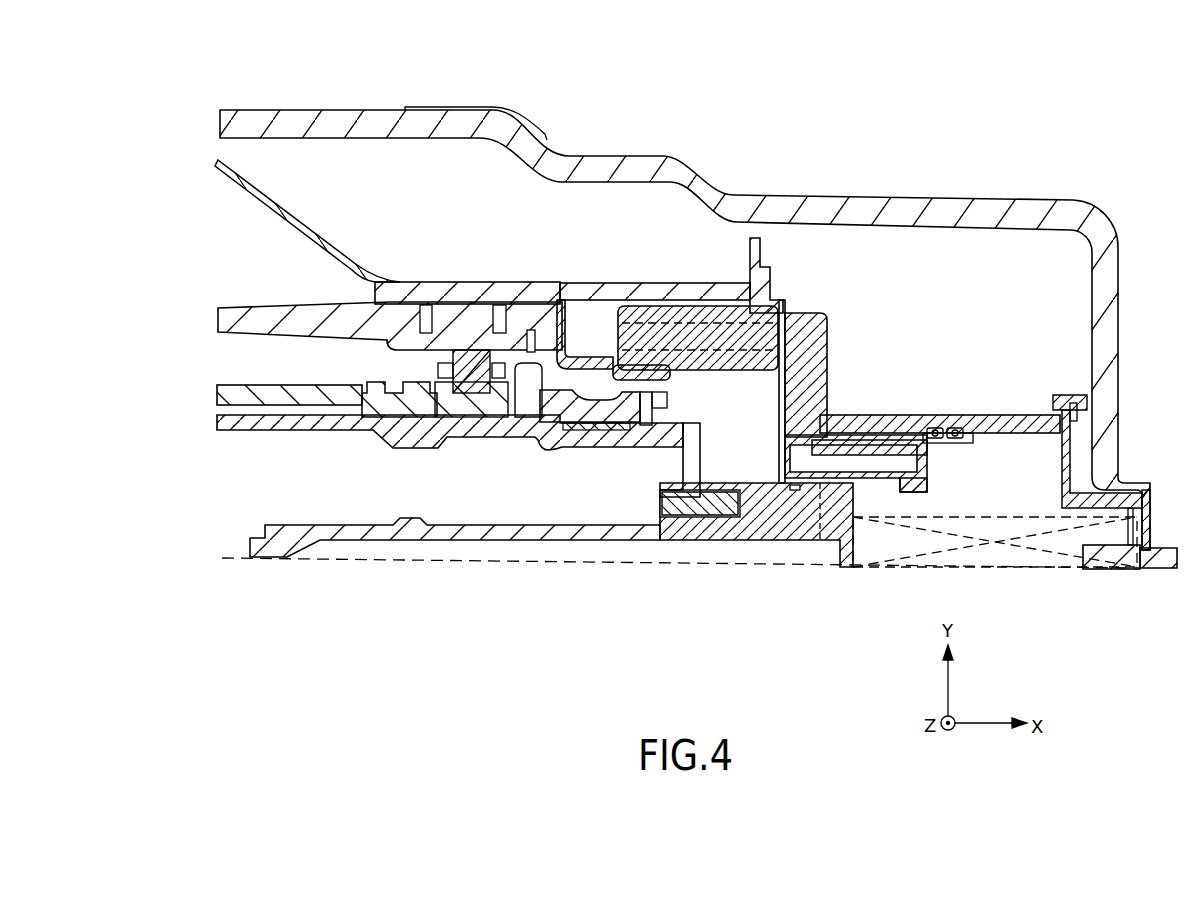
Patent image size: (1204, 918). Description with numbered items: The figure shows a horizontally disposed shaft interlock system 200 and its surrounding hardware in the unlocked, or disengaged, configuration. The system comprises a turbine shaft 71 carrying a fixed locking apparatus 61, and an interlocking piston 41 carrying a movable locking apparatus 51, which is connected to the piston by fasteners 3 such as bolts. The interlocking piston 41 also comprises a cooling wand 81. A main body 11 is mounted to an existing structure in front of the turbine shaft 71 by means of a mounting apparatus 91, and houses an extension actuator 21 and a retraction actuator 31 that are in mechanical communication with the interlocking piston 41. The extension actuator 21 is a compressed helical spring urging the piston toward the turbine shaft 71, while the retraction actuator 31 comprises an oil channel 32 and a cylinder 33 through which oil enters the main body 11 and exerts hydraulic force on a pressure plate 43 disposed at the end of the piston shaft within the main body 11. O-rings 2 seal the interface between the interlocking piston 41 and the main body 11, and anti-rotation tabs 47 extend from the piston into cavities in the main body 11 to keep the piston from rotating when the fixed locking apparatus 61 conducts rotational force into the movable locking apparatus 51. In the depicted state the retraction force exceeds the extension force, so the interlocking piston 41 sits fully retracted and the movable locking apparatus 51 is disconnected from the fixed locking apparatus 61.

The shaft interlock system 200 is at (652, 77).
The O-rings 2 is at (935, 437).
The fasteners 3 is at (675, 514).
The main body 11 is at (1030, 415).
The extension actuator 21 is at (1022, 518).
The retraction actuator 31 is at (675, 320).
The oil channel 32 is at (820, 338).
The cylinder 33 is at (800, 446).
The interlocking piston 41 is at (776, 520).
The pressure plate 43 is at (900, 490).
The anti-rotation tabs 47 is at (915, 438).
The movable locking apparatus 51 is at (673, 442).
The fixed locking apparatus 61 is at (657, 443).
The turbine shaft 71 is at (487, 428).
The cooling wand 81 is at (450, 543).
The mounting apparatus 91 is at (777, 314).